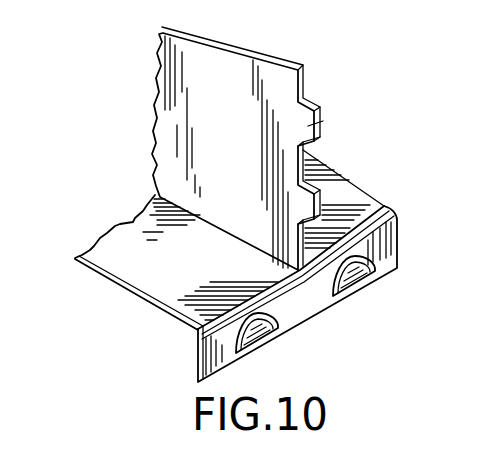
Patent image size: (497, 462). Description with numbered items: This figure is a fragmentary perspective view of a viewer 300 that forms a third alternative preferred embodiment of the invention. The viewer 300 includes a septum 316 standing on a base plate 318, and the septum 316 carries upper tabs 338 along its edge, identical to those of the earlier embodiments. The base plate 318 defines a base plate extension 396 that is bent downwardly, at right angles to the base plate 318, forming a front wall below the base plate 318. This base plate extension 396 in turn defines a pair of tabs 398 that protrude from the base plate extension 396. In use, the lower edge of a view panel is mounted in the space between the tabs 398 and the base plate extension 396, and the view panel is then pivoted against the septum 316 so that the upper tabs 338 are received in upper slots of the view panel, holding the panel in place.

The viewer 300 is at (146, 159).
The septum 316 is at (252, 150).
The base plate 318 is at (220, 276).
The upper tabs 338 is at (322, 208).
The base plate extension 396 is at (297, 303).
The tabs 398 is at (252, 345).